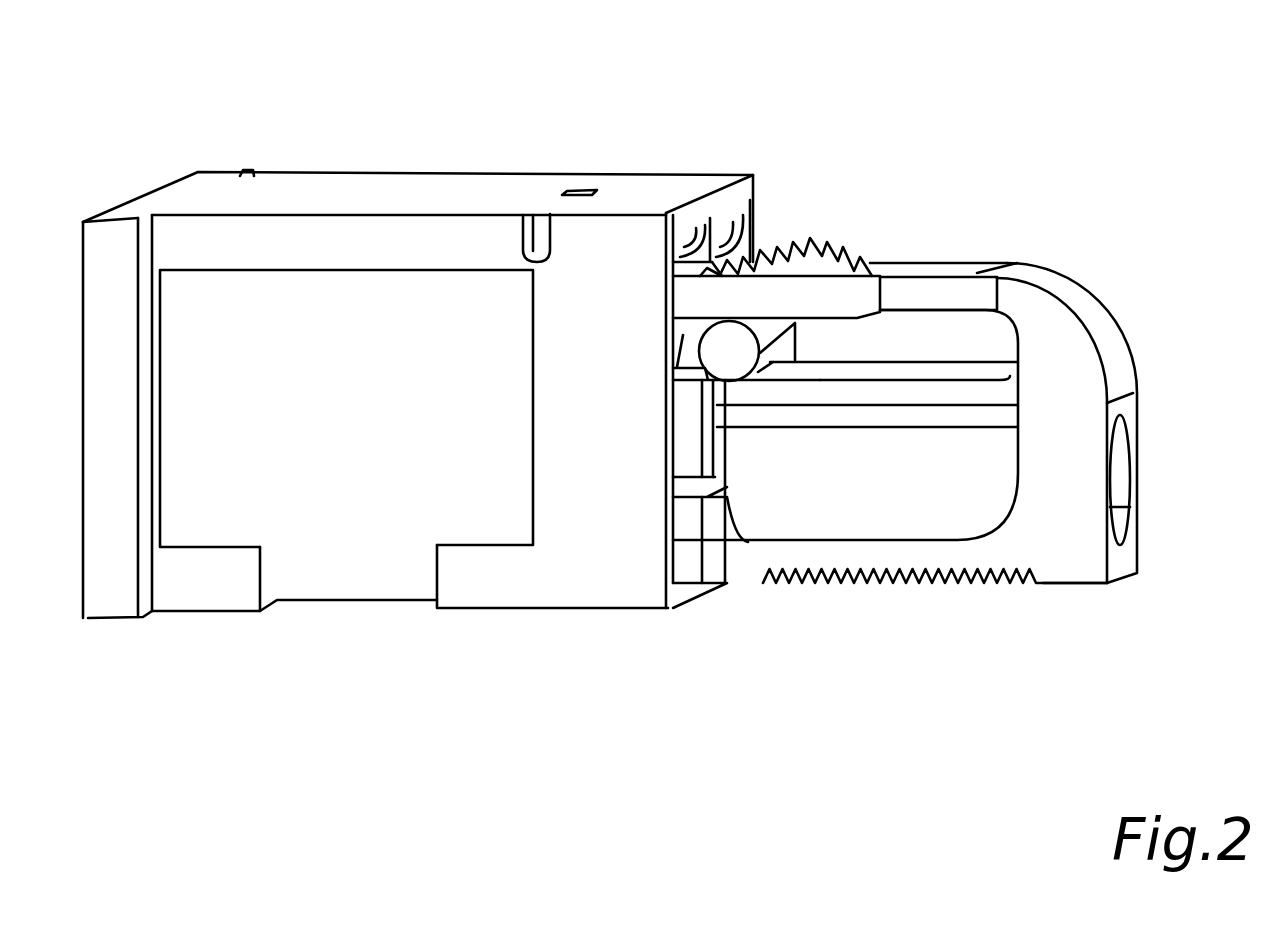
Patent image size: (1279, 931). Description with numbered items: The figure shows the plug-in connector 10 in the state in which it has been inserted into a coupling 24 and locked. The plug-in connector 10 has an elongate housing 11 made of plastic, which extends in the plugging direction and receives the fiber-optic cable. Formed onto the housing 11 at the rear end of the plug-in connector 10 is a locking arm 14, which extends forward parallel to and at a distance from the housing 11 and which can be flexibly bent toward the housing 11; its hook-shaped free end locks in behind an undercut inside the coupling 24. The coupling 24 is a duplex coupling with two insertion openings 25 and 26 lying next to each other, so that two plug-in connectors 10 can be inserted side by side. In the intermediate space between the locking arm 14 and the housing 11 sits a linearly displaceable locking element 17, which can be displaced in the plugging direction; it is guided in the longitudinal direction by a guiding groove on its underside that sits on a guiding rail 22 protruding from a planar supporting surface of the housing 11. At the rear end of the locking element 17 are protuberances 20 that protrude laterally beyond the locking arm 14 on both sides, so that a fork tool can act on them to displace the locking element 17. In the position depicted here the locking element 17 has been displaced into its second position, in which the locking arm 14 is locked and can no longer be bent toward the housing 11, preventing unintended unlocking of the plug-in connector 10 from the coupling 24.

The plug-in connector 10 is at (1002, 191).
The housing 11 is at (851, 503).
The locking arm 14 is at (789, 240).
The locking element 17 is at (668, 372).
The protuberances 20 is at (726, 356).
The guiding rail 22 is at (948, 358).
The coupling 24 is at (357, 630).
The insertion opening 25 is at (675, 215).
The insertion opening 26 is at (724, 238).